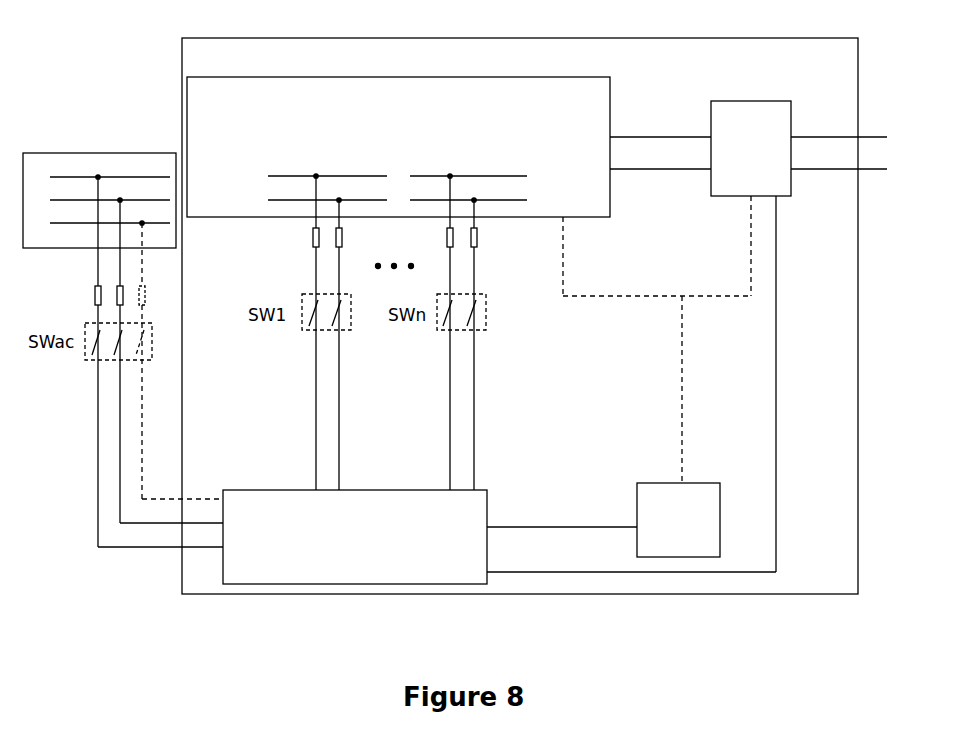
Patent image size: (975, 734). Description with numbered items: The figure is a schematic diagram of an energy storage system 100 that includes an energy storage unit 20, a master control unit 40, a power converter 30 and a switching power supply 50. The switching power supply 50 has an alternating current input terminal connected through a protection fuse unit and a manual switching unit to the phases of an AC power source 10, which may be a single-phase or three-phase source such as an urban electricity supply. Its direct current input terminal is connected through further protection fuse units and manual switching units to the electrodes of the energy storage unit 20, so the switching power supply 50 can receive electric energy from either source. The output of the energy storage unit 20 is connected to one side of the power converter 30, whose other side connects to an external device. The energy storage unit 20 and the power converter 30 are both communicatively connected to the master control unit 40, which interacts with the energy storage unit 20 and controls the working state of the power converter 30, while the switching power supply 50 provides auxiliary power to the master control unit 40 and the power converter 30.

The power supply system 100 is at (418, 38).
The AC power source 10 is at (68, 153).
The energy storage unit 20 is at (330, 77).
The power converter 30 is at (745, 101).
The master control unit 40 is at (683, 483).
The switching power supply 50 is at (368, 490).